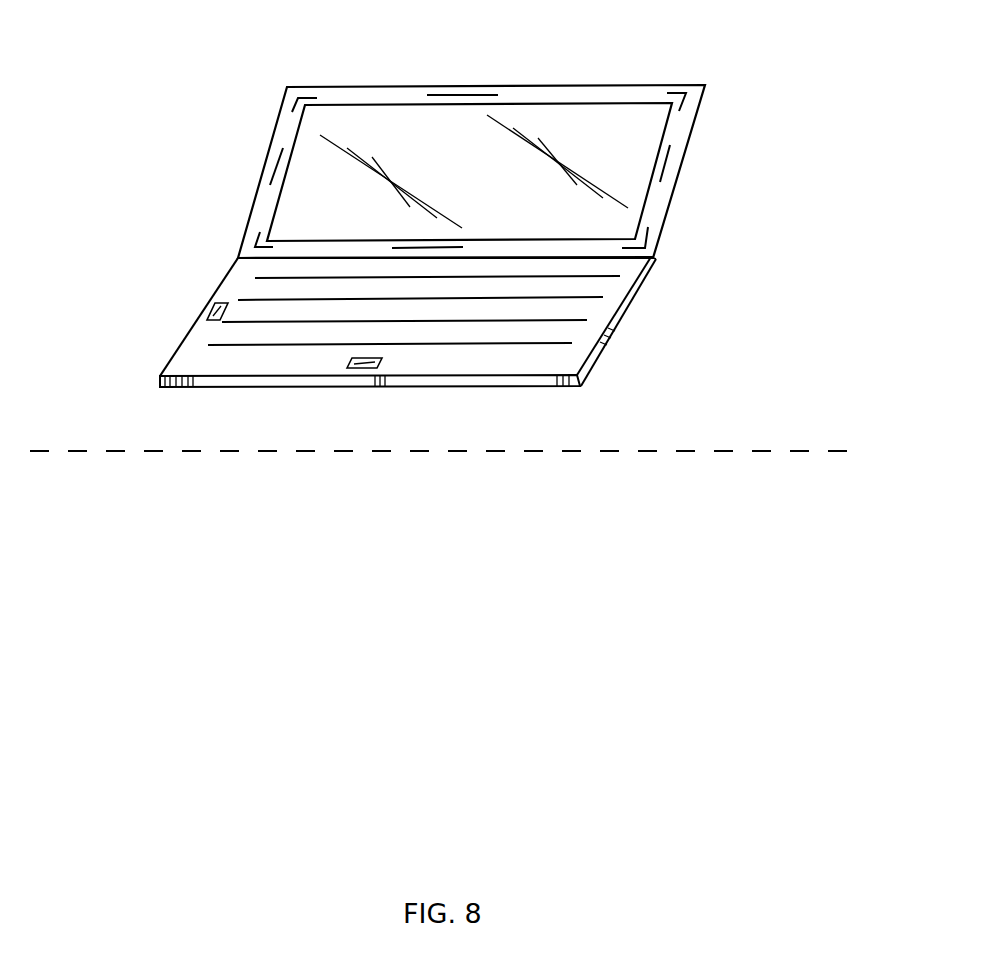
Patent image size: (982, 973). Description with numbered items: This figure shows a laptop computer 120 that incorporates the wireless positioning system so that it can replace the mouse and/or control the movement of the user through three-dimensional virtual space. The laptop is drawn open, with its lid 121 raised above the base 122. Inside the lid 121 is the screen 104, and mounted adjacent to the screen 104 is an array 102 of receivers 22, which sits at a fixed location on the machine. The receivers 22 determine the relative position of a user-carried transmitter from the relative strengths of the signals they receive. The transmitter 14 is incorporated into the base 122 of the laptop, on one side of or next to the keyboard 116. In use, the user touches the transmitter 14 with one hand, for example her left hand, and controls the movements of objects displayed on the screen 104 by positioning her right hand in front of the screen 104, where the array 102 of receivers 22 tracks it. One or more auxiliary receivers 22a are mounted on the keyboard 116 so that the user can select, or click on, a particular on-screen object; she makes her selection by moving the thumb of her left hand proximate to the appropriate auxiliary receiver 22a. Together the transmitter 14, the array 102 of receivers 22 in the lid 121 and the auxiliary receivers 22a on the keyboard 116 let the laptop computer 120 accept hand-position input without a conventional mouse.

The laptop computer 120 is at (492, 238).
The array 102 is at (452, 149).
The screen 104 is at (300, 185).
The lid 121 is at (316, 86).
The receiver 22 is at (684, 97).
The keyboard 116 is at (421, 346).
The transmitter 14 is at (205, 313).
The auxiliary receiver 22a is at (362, 368).
The base 122 is at (182, 388).